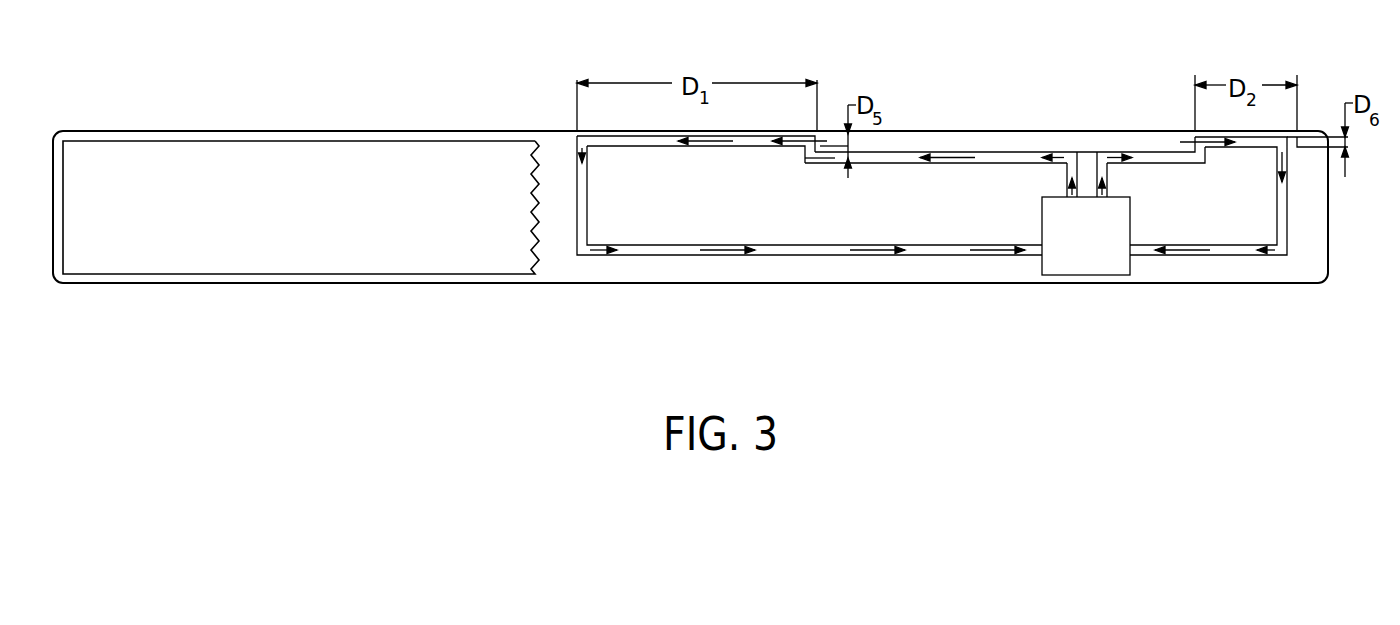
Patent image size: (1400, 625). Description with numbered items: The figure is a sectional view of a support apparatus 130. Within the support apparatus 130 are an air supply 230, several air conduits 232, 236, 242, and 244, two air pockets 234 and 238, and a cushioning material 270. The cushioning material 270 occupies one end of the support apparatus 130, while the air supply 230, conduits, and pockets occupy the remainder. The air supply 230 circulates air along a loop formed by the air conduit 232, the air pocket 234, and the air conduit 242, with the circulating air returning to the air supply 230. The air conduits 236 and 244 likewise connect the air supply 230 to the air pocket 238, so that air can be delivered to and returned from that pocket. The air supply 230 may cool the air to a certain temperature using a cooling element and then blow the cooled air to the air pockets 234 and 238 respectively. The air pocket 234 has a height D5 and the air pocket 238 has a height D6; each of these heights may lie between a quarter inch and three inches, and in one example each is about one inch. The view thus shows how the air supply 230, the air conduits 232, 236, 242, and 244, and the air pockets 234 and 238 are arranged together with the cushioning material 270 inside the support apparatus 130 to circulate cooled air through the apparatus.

The support apparatus 130 is at (898, 285).
The air supply 230 is at (1092, 266).
The air conduit 232 is at (977, 152).
The air pocket 234 is at (649, 136).
The air conduit 236 is at (1148, 152).
The air pocket 238 is at (1290, 135).
The air conduit 242 is at (700, 256).
The air conduit 244 is at (1212, 257).
The cushioning material 270 is at (257, 153).